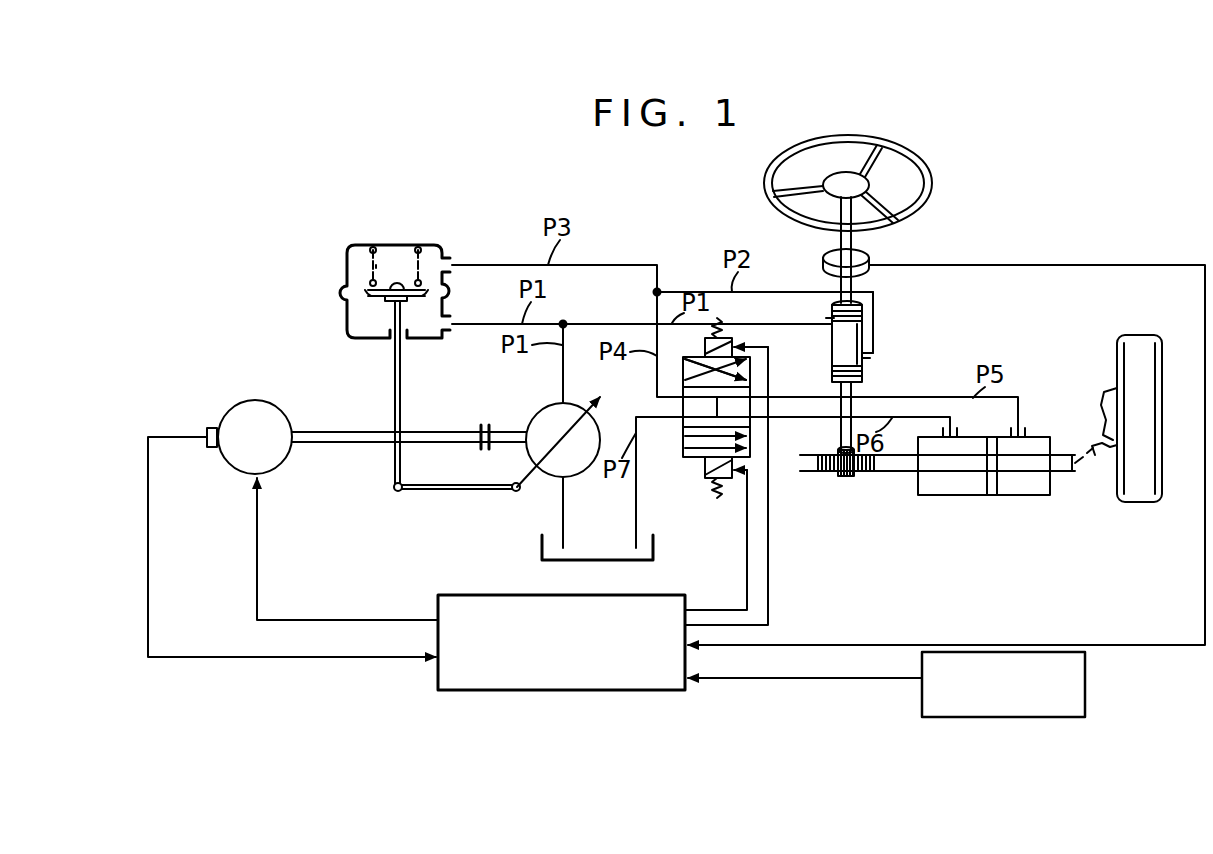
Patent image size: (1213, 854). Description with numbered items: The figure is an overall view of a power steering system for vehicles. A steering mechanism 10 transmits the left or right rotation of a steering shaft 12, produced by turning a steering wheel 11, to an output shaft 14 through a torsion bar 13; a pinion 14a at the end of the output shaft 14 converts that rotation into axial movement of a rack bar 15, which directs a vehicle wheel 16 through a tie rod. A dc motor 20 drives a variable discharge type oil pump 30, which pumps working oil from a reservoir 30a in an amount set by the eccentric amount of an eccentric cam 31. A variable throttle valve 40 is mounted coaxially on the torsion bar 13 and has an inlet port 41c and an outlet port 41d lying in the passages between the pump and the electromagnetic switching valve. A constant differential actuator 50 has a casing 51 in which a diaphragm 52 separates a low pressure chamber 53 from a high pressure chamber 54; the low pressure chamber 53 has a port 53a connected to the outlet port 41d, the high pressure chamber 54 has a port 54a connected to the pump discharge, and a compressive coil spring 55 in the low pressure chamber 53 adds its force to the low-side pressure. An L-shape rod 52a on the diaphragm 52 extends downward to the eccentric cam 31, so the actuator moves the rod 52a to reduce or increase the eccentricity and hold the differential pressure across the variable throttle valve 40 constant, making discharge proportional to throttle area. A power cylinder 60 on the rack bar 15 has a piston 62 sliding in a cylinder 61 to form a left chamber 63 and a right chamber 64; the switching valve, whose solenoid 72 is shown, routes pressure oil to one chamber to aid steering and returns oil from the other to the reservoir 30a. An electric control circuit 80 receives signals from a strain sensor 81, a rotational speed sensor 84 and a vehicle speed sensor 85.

The steering mechanism 10 is at (954, 236).
The steering wheel 11 is at (913, 148).
The steering shaft 12 is at (840, 245).
The torsion bar 13 is at (863, 322).
The output shaft 14 is at (840, 432).
The pinion 14a is at (840, 478).
The rack bar 15 is at (894, 473).
The vehicle wheel 16 is at (1139, 334).
The dc motor 20 is at (236, 404).
The variable discharge type oil pump 30 is at (543, 486).
The reservoir 30a is at (600, 558).
The eccentric cam 31 is at (603, 398).
The variable throttle valve 40 is at (832, 360).
The inlet port 41c is at (826, 318).
The outlet port 41d is at (863, 360).
The constant differential actuator 50 is at (401, 279).
The casing 51 is at (360, 245).
The diaphragm 52 is at (350, 296).
The L-shape rod 52a is at (392, 467).
The low pressure chamber 53 is at (390, 250).
The port 53a is at (450, 262).
The high pressure chamber 54 is at (376, 340).
The port 54a is at (452, 322).
The compressive coil spring 55 is at (368, 260).
The power cylinder 60 is at (1005, 495).
The cylinder 61 is at (1052, 492).
The piston 62 is at (990, 497).
The left chamber 63 is at (937, 497).
The right chamber 64 is at (1029, 497).
The solenoid 72 is at (705, 348).
The electric control circuit 80 is at (482, 691).
The strain sensor 81 is at (871, 264).
The rotational speed sensor 84 is at (216, 451).
The vehicle speed sensor 85 is at (1085, 692).